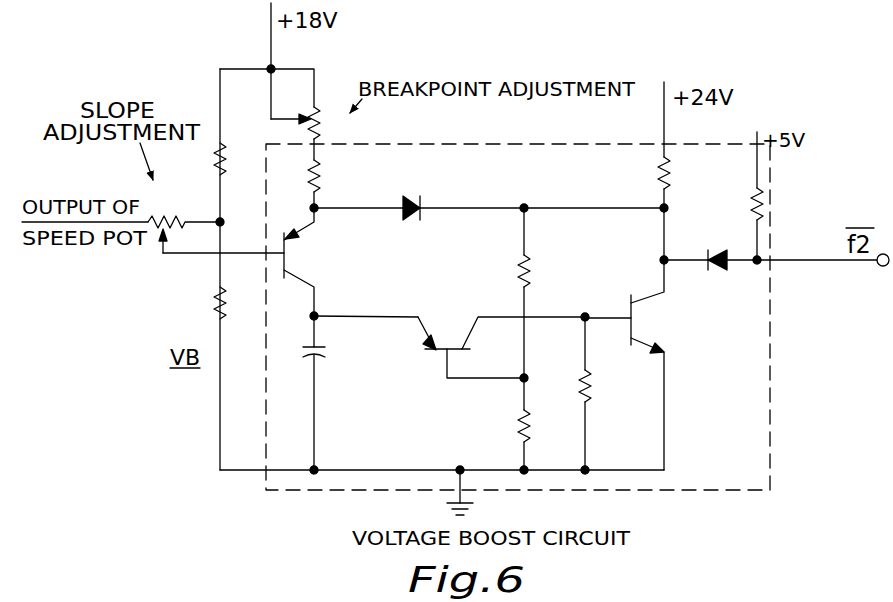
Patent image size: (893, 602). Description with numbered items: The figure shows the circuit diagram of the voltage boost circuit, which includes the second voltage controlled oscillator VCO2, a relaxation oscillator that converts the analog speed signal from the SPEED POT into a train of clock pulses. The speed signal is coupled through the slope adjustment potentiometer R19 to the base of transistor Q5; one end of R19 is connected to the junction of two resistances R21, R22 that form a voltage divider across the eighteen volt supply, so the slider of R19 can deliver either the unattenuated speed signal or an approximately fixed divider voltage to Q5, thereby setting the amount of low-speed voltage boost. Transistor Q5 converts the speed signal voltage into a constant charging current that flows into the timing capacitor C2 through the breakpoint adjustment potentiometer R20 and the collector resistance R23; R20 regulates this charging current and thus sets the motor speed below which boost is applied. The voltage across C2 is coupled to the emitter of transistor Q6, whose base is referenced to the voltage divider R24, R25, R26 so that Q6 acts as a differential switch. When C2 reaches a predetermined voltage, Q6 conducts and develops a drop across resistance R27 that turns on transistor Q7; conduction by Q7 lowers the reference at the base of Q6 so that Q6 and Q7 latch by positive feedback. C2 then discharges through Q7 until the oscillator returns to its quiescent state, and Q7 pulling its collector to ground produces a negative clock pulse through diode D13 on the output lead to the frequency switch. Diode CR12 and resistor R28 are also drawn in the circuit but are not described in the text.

The slope adjustment potentiometer R19 is at (213, 219).
The breakpoint adjustment potentiometer R20 is at (319, 123).
The resistance R21 is at (215, 160).
The resistance R22 is at (215, 302).
The collector resistance R23 is at (337, 173).
The voltage divider resistor R24 is at (658, 172).
The voltage divider resistor R25 is at (532, 277).
The voltage divider resistor R26 is at (516, 424).
The resistance R27 is at (592, 387).
The resistor R28 is at (727, 196).
The diode CR12 is at (428, 197).
The diode D13 is at (725, 274).
The transistor Q5 is at (308, 262).
The transistor Q6 is at (432, 340).
The transistor Q7 is at (646, 338).
The timing capacitor C2 is at (326, 355).
The second voltage controlled oscillator VCO2 is at (771, 352).